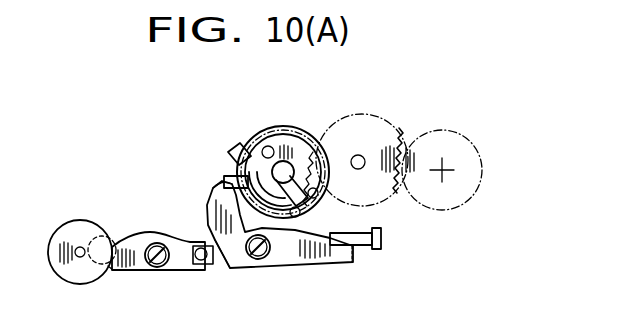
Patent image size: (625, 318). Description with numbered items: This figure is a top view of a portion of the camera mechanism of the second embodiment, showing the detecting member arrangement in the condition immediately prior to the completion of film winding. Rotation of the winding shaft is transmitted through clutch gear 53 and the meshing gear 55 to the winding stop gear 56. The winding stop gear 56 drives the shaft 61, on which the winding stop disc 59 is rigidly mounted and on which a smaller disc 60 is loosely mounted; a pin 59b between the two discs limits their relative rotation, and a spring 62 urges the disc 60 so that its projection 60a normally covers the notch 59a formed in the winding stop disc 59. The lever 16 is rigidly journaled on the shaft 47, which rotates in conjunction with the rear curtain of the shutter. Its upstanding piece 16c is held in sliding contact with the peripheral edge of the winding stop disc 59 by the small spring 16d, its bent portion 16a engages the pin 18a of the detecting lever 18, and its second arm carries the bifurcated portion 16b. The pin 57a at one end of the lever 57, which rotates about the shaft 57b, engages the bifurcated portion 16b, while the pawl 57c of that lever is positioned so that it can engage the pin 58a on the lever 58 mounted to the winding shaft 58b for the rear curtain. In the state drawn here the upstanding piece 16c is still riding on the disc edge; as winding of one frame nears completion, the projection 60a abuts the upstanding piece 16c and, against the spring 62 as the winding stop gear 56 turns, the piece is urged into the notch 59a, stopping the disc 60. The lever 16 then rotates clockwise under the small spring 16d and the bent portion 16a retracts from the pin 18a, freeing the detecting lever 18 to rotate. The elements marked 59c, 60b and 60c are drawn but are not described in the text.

The lever 16 is at (312, 262).
The bent portion 16a is at (354, 258).
The bifurcated portion 16b is at (199, 266).
The upstanding piece 16c is at (216, 190).
The small spring 16d is at (236, 258).
The detecting lever 18 is at (380, 243).
The pin 18a is at (376, 234).
The shaft 47 is at (271, 262).
The clutch gear 53 is at (470, 145).
The gear 55 is at (400, 132).
The winding stop gear 56 is at (293, 127).
The lever 57 is at (140, 268).
The pin 57a is at (199, 248).
The shaft 57b is at (153, 244).
The pawl 57c is at (104, 274).
The lever 58 is at (77, 276).
The pin 58a is at (104, 238).
The winding shaft 58b is at (77, 250).
The winding stop disc 59 is at (274, 126).
The notch 59a is at (226, 180).
The pin 59b is at (257, 137).
The crank pin 59c is at (300, 214).
The disc 60 is at (280, 126).
The projection 60a is at (232, 155).
The cam channel 60b is at (264, 127).
The cam pin 60c is at (322, 202).
The shaft 61 is at (306, 136).
The spring 62 is at (243, 148).